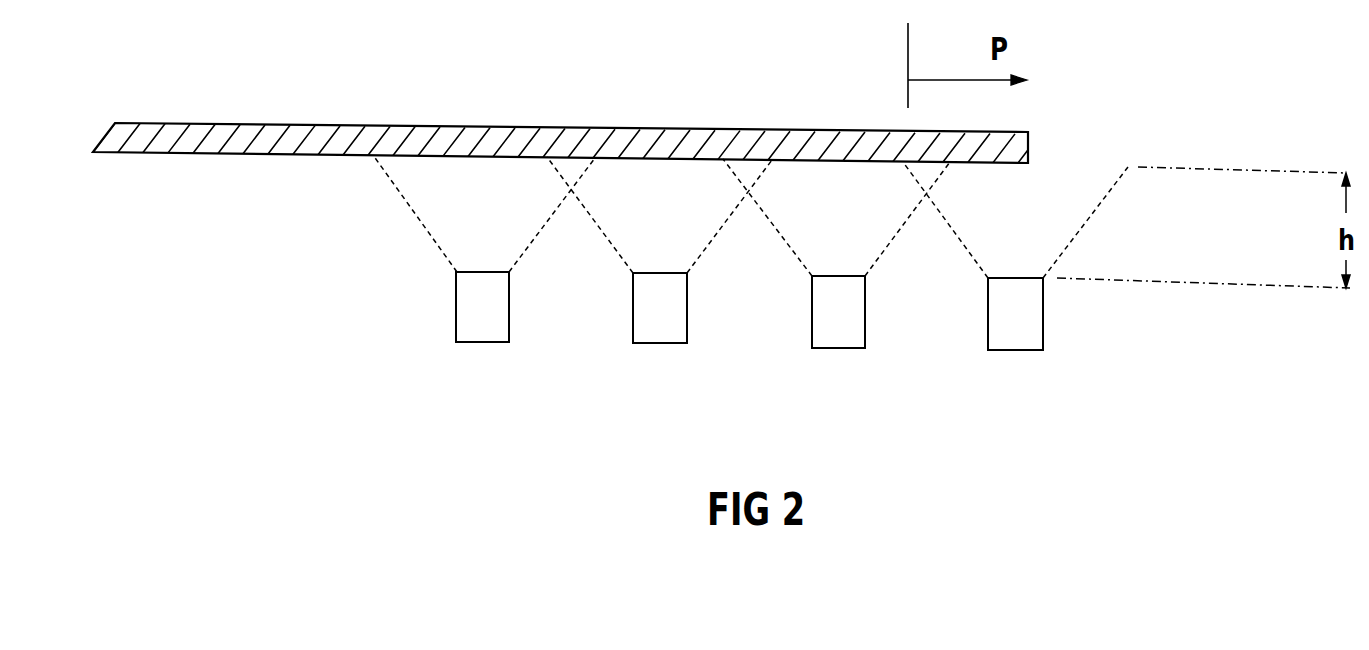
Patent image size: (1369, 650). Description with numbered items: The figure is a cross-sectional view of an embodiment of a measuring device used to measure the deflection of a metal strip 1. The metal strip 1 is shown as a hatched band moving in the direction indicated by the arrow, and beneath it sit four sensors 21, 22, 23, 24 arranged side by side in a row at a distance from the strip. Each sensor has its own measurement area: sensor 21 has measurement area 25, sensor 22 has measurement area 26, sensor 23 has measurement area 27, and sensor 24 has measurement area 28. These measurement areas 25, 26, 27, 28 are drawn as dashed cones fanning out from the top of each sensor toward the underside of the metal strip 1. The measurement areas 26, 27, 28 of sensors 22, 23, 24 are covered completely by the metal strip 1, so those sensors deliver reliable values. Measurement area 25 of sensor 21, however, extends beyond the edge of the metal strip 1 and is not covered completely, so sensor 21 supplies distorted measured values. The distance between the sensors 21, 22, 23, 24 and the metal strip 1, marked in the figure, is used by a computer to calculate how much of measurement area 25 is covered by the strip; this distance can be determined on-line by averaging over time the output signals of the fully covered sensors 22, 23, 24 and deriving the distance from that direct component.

The metal strip 1 is at (382, 122).
The sensor 21 is at (1025, 340).
The sensor 22 is at (845, 337).
The sensor 23 is at (663, 333).
The sensor 24 is at (487, 332).
The measurement area 25 is at (1063, 220).
The measurement area 26 is at (880, 230).
The measurement area 27 is at (700, 227).
The measurement area 28 is at (525, 220).